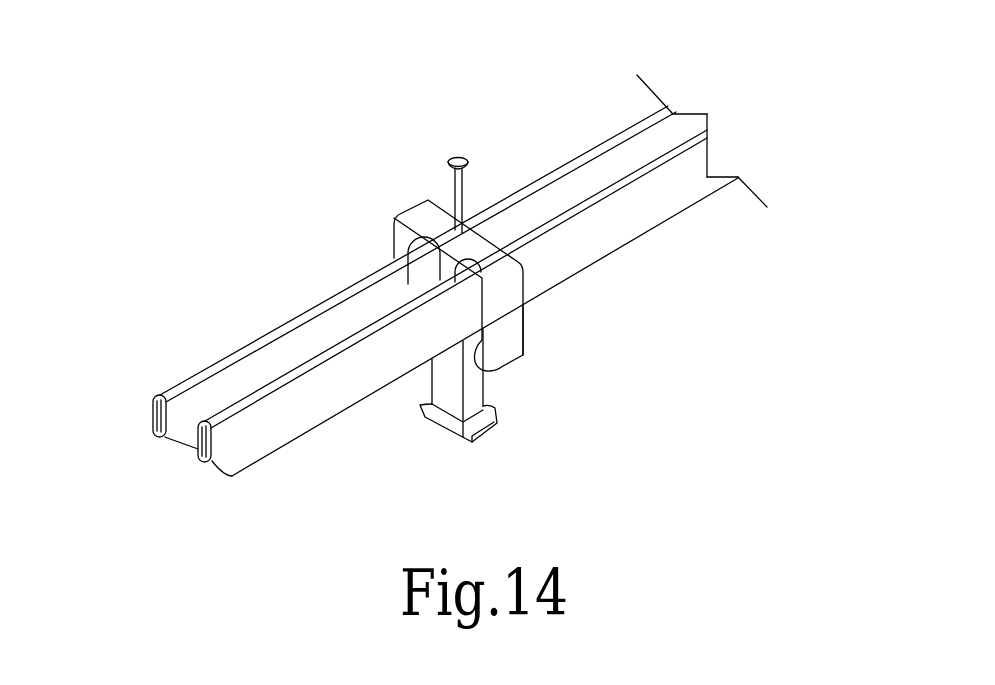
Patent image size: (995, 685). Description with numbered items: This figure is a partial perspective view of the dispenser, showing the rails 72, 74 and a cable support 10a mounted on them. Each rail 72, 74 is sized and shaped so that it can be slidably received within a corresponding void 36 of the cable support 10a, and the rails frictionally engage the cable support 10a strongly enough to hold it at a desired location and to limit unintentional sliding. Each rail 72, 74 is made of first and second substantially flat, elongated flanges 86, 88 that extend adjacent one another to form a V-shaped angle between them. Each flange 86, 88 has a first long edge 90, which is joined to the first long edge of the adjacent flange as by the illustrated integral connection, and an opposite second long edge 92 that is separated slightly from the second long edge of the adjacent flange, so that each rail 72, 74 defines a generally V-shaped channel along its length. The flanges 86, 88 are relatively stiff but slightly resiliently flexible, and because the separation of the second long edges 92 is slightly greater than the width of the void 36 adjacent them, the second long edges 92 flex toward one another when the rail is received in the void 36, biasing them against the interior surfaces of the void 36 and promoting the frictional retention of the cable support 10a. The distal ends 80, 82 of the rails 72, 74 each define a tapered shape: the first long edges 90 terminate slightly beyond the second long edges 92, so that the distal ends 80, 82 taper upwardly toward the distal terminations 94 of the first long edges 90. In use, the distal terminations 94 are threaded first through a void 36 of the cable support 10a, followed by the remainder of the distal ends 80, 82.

The cable support 10a is at (427, 203).
The void 36 is at (468, 265).
The rail 72 is at (652, 232).
The rail 74 is at (560, 163).
The distal end 80 is at (253, 478).
The distal end 82 is at (122, 397).
The first flange 86 is at (227, 390).
The second flange 88 is at (158, 423).
The first long edge 90 is at (373, 323).
The second long edge 92 is at (542, 298).
The distal termination 94 is at (199, 422).